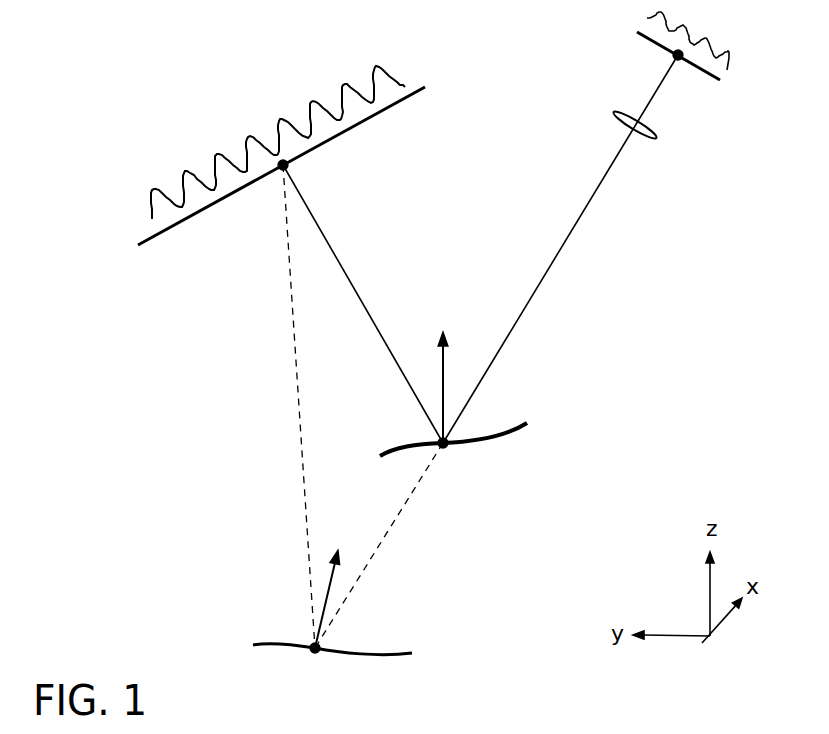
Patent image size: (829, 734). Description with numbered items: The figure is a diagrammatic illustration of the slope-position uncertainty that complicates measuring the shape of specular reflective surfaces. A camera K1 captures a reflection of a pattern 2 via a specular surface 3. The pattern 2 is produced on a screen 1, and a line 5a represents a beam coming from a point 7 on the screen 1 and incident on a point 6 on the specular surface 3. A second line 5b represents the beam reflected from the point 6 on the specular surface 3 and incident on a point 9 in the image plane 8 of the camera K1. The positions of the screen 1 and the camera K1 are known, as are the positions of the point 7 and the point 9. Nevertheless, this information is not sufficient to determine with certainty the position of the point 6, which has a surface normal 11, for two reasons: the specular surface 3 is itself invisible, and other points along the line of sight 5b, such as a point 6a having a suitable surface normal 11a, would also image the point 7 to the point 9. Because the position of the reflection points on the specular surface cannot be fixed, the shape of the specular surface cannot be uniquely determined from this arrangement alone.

The screen 1 is at (273, 176).
The pattern 2 is at (278, 142).
The specular surface 3 is at (467, 428).
The line representing incident beam 5a is at (363, 304).
The line representing reflected beam (line of sight) 5b is at (560, 249).
The point on the specular surface 6 is at (454, 456).
The alternative point along the line of sight 6a is at (332, 667).
The point on the screen 7 is at (299, 174).
The image plane of the camera 8 is at (691, 60).
The point in the image plane 9 is at (665, 65).
The surface normal 11 is at (461, 378).
The surface normal of alternative point 11a is at (341, 586).
The camera K1 is at (661, 139).